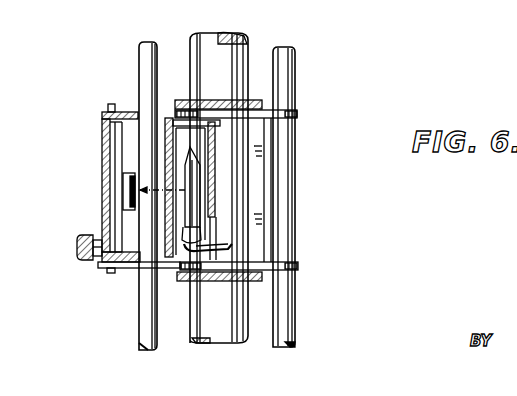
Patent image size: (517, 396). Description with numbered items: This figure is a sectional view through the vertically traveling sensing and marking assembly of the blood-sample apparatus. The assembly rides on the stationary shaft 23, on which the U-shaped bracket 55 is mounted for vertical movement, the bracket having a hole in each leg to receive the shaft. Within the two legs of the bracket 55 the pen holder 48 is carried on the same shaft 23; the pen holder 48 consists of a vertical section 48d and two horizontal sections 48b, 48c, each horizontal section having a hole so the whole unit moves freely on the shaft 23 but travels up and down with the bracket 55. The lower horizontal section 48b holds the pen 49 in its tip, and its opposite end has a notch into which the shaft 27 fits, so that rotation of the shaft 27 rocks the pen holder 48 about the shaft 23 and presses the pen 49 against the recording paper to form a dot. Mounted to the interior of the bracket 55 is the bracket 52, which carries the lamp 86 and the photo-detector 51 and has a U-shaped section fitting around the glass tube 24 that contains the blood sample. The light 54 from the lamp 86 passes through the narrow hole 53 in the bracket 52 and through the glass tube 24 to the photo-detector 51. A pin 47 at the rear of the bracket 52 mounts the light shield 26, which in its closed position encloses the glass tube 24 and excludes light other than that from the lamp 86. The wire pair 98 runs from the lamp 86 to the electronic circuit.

The stationary shaft 23 is at (216, 50).
The glass tube 24 is at (145, 62).
The light shield 26 is at (100, 140).
The shaft 27 is at (296, 68).
The pin 47 is at (107, 104).
The pen holder 48 is at (258, 165).
The lower horizontal section 48b is at (298, 268).
The upper horizontal section 48c is at (297, 115).
The vertical section 48d is at (264, 143).
The pen 49 is at (78, 250).
The photo-detector 51 is at (125, 190).
The bracket 52 is at (165, 112).
The hole 53 is at (192, 188).
The light 54 is at (143, 184).
The U-shaped bracket 55 is at (258, 282).
The lamp 86 is at (198, 184).
The wire pair 98 is at (219, 284).